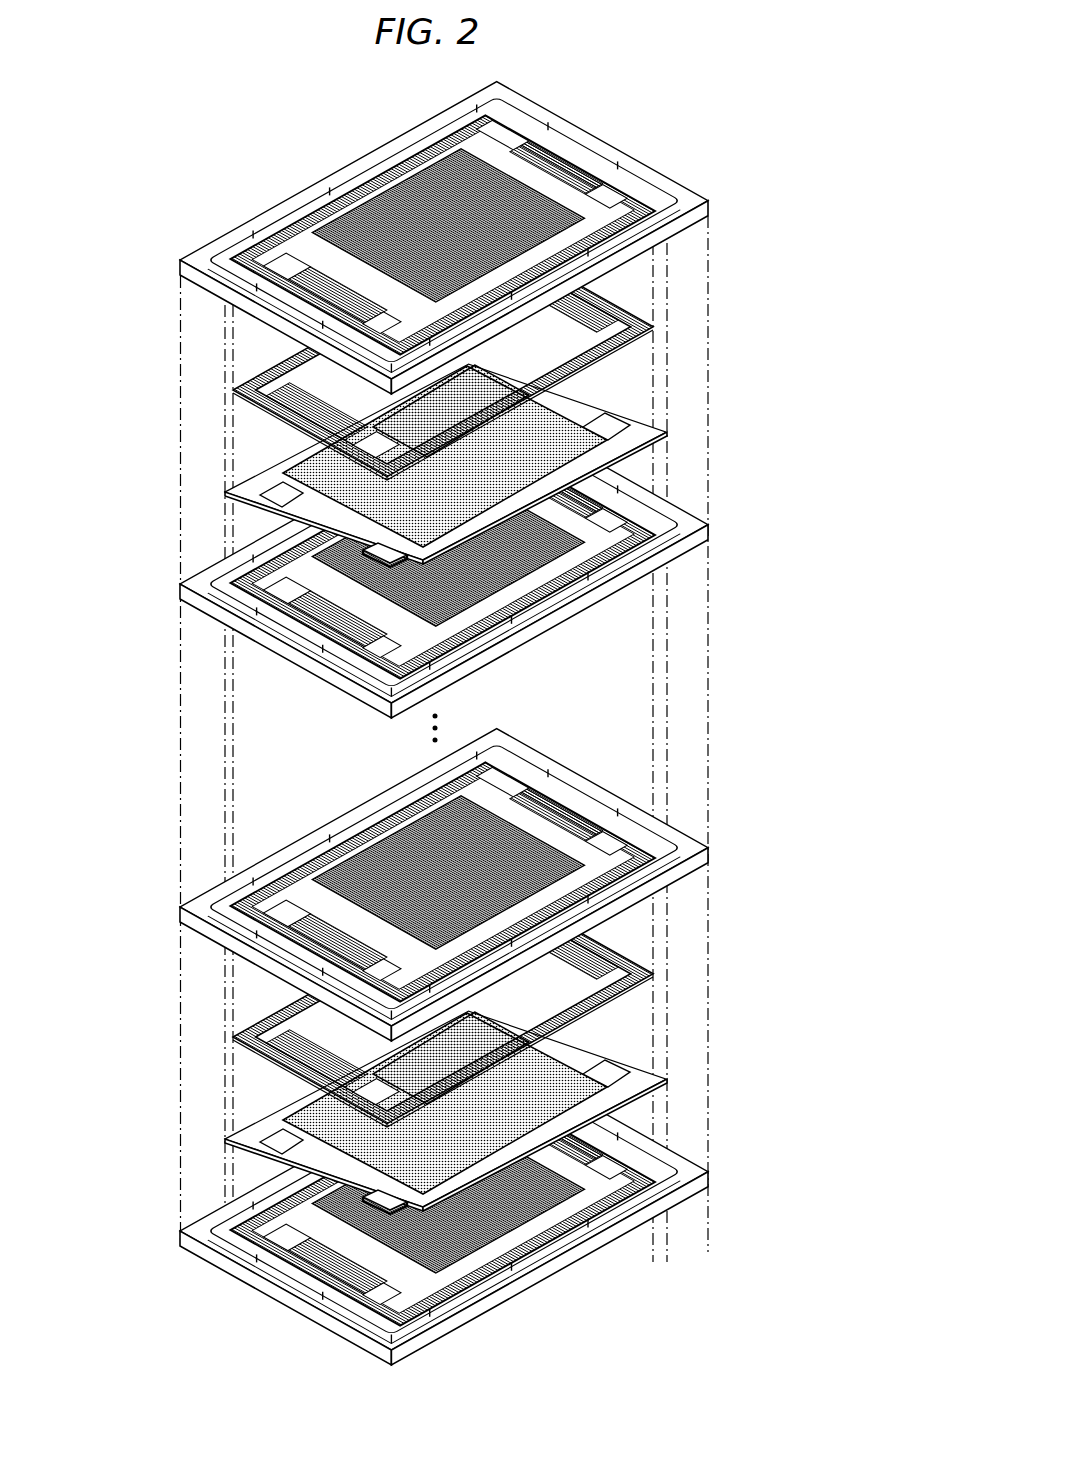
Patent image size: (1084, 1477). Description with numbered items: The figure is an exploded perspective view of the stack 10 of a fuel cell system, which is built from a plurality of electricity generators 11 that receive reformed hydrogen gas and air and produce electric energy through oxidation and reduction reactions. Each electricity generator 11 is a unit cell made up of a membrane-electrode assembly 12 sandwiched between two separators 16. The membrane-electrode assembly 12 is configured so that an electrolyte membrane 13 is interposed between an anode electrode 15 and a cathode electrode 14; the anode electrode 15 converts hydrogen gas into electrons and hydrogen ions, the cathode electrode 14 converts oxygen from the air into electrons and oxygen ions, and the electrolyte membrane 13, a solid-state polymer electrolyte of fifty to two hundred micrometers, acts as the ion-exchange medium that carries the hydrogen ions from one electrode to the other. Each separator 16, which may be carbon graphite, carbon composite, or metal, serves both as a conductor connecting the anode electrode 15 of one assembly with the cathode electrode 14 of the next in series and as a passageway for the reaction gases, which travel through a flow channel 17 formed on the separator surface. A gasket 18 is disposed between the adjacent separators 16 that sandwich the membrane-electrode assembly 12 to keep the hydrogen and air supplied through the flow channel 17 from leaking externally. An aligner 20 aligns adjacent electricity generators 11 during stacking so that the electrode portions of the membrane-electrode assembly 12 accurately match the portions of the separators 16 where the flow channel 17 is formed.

The stack 10 is at (300, 117).
The electricity generator 11 is at (520, 400).
The membrane-electrode assembly 12 is at (522, 462).
The electrolyte membrane 13 is at (587, 397).
The cathode electrode 14 is at (590, 420).
The anode electrode 15 is at (592, 445).
The separator 16 is at (500, 400).
The flow channel 17 is at (352, 193).
The gasket 18 is at (270, 218).
The aligner 20 is at (583, 147).